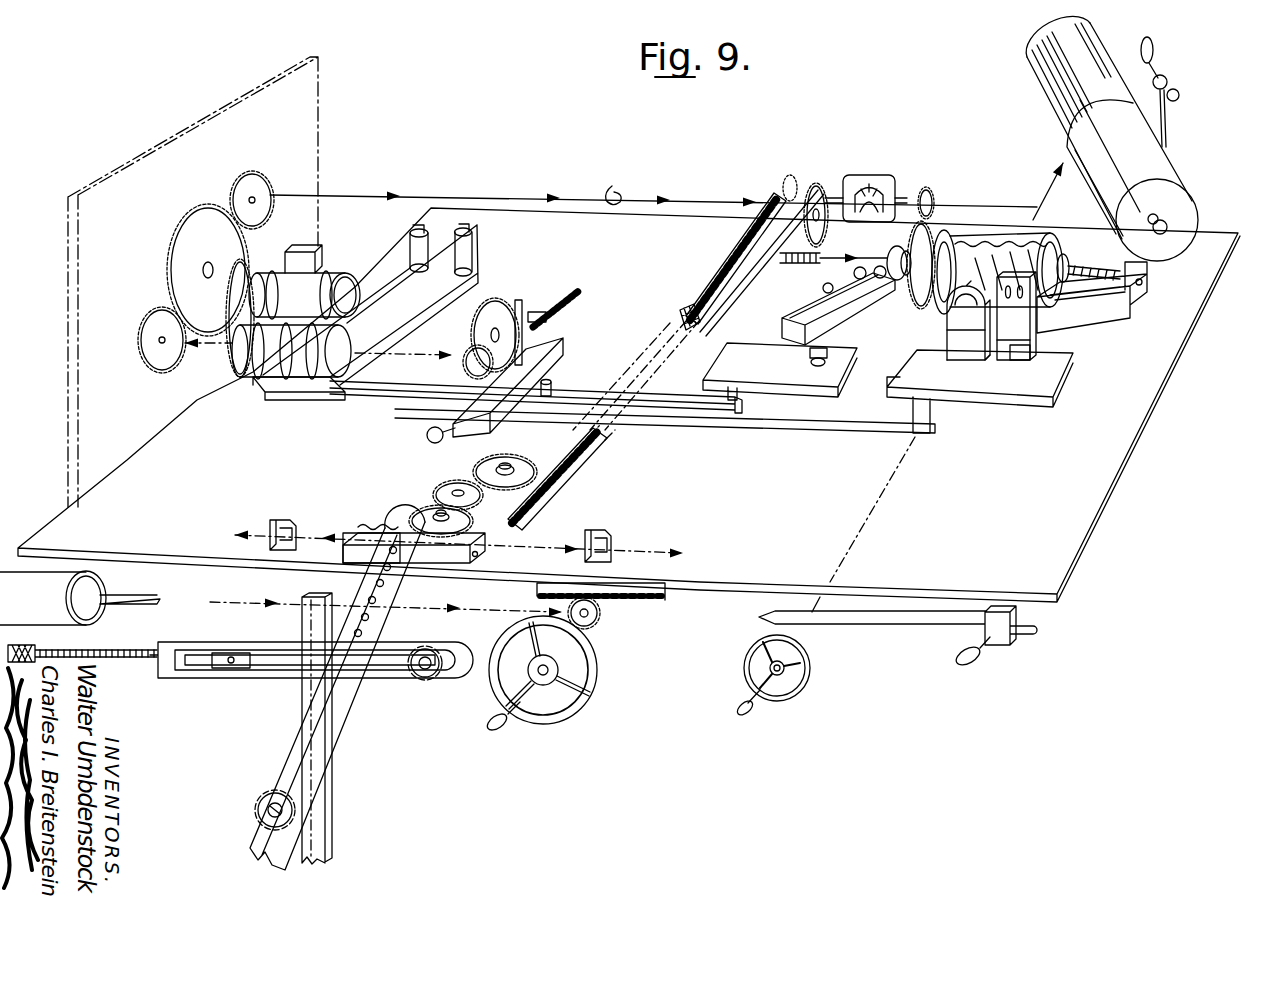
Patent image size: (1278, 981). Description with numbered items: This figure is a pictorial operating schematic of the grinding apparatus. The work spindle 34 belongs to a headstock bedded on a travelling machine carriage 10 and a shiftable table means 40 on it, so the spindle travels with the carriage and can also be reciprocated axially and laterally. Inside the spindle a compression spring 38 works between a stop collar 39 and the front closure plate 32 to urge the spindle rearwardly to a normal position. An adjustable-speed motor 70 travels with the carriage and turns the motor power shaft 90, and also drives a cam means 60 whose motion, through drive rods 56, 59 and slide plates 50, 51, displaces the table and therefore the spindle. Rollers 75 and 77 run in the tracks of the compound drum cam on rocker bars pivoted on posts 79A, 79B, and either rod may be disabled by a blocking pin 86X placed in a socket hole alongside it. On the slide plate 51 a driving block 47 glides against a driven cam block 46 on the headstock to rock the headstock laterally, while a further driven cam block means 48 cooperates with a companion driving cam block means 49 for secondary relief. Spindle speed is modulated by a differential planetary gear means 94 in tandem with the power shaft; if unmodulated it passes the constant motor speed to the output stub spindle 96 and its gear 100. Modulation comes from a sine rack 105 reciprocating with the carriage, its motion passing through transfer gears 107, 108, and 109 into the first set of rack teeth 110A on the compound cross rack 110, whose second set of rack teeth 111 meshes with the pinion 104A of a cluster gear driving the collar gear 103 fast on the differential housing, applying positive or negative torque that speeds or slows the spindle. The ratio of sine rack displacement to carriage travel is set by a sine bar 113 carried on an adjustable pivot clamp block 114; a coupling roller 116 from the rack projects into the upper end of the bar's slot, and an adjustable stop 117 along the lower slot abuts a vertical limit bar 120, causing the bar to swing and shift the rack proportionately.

The travelling machine carriage 10 is at (1077, 460).
The end plug 32 is at (1052, 236).
The work spindle 34 is at (862, 265).
The compression spring 38 is at (975, 256).
The stop collar 39 is at (952, 240).
The shiftable table means 40 is at (1073, 296).
The driven cam block 46 is at (957, 316).
The driving block 47 is at (947, 338).
The driven cam block means 48 is at (980, 323).
The driving cam block means 49 is at (1014, 350).
The slide plate 50 is at (763, 378).
The slide plate 51 is at (960, 387).
The drive rod 56 is at (688, 400).
The drive rod 59 is at (694, 418).
The cam means 60 is at (248, 380).
The adjustable-speed motor 70 is at (330, 268).
The roller 75 is at (264, 386).
The roller 77 is at (304, 386).
The post 79A is at (412, 246).
The post 79B is at (474, 250).
The blocking pin 86X is at (572, 372).
The motor power shaft 90 is at (358, 196).
The differential planetary gear means 94 is at (895, 178).
The output stub spindle 96 is at (915, 200).
The gear 100 is at (928, 216).
The collar gear 103 is at (838, 168).
The pinion 104A is at (774, 212).
The sine rack 105 is at (353, 546).
The transfer gear 107 is at (463, 528).
The transfer gear 108 is at (443, 492).
The sine-drive input gear 109 is at (482, 482).
The compound cross rack 110 is at (713, 264).
The first set of rack teeth 110A is at (557, 478).
The second set of rack teeth 111 is at (793, 197).
The sine bar 113 is at (393, 518).
The adjustable pivot clamp block 114 is at (368, 634).
The coupling roller 116 is at (462, 546).
The adjustable stop 117 is at (258, 803).
The vertical limit bar 120 is at (320, 818).